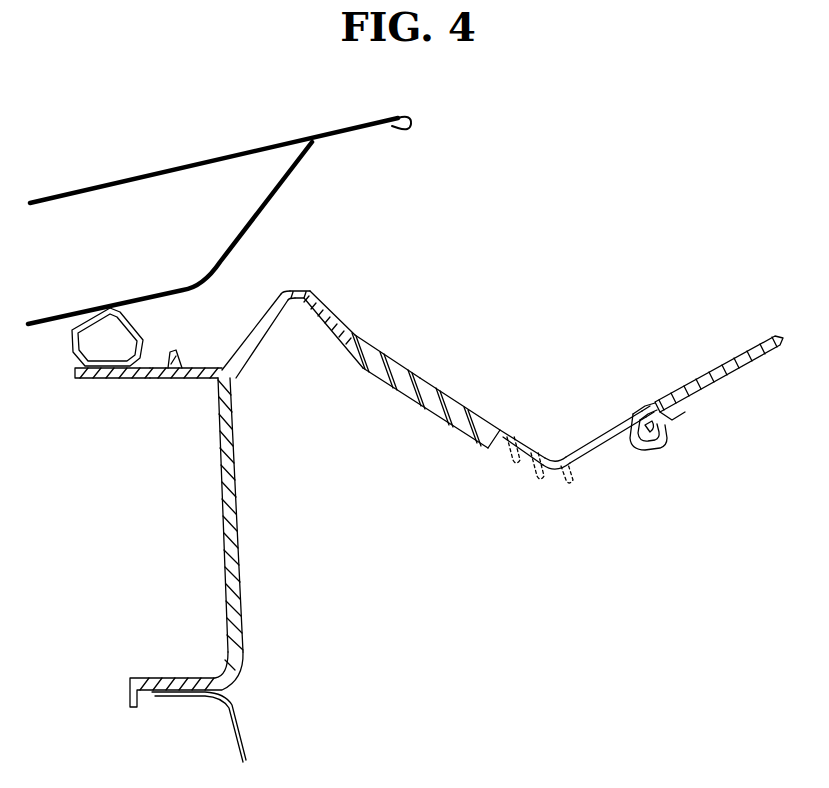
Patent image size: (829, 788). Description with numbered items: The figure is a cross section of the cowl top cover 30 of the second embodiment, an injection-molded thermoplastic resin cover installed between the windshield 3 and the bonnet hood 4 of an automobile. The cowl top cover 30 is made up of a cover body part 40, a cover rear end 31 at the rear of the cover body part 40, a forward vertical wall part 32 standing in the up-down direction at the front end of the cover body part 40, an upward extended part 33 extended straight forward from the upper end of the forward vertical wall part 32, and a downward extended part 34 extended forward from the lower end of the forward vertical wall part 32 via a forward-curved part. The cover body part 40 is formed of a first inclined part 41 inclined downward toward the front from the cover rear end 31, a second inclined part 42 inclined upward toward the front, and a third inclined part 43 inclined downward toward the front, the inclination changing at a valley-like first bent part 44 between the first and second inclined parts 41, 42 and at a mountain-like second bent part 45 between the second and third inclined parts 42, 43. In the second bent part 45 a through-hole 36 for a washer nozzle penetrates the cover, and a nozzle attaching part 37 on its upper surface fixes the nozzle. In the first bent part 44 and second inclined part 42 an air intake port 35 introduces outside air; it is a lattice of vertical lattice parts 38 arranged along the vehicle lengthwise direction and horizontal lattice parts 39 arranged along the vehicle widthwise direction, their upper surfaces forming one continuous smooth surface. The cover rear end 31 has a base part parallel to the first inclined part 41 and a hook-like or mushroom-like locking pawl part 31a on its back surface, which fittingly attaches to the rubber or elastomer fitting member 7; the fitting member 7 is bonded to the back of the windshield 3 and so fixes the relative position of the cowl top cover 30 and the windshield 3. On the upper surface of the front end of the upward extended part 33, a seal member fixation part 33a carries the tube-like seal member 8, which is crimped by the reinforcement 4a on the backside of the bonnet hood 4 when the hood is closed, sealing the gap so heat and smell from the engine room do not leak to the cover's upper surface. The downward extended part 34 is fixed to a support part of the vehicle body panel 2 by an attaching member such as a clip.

The vehicle body panel 2 is at (247, 713).
The windshield 3 is at (746, 375).
The bonnet hood 4 is at (190, 164).
The reinforcement 4a is at (276, 189).
The fitting member 7 is at (661, 452).
The seal member 8 is at (137, 325).
The cowl top cover 30 is at (426, 367).
The cover rear end 31 is at (642, 416).
The locking pawl part 31a is at (645, 416).
The forward vertical wall part 32 is at (237, 553).
The upward extended part 33 is at (198, 379).
The seal member fixation part 33a is at (103, 377).
The downward extended part 34 is at (166, 678).
The air intake port 35 is at (519, 438).
The through-hole 36 is at (293, 290).
The nozzle attaching part 37 is at (315, 296).
The vertical lattice parts 38 is at (462, 432).
The horizontal lattice parts 39 is at (447, 426).
The cover body part 40 is at (358, 335).
The first inclined part 41 is at (604, 445).
The second inclined part 42 is at (404, 362).
The third inclined part 43 is at (246, 356).
The first bent part 44 is at (551, 466).
The second bent part 45 is at (296, 300).